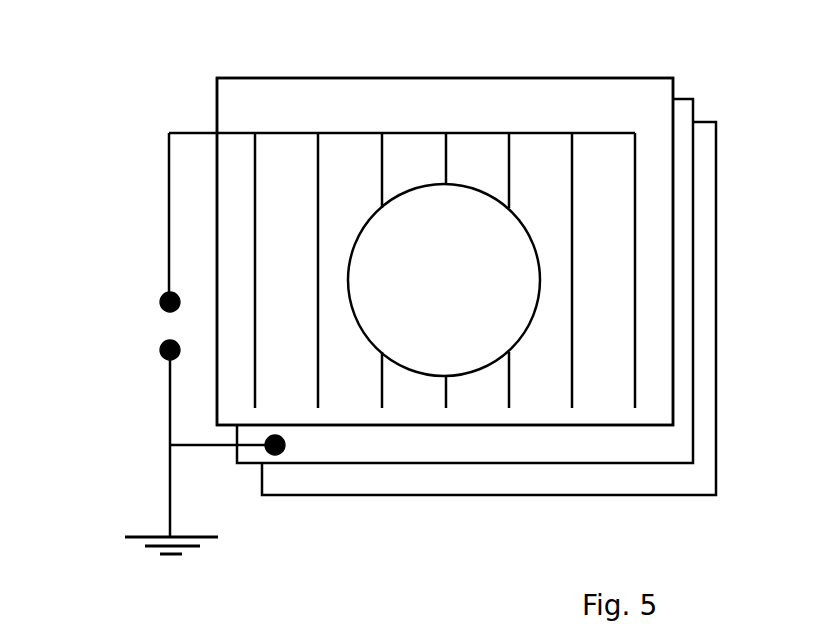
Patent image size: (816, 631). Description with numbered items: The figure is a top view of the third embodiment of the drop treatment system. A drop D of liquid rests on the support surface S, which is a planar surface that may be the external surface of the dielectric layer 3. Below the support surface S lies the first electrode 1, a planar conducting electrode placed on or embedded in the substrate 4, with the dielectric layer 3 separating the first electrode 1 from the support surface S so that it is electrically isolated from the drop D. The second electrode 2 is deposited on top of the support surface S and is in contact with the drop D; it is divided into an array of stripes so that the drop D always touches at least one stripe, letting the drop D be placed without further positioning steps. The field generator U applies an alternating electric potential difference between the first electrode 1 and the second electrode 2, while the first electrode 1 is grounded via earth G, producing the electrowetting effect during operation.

The first electrode 1 is at (207, 445).
The second electrode 2 is at (169, 180).
The dielectric layer 3 is at (583, 93).
The substrate 4 is at (369, 474).
The support surface S is at (278, 96).
The drop D is at (453, 295).
The field generator U is at (152, 414).
The earth G is at (133, 537).